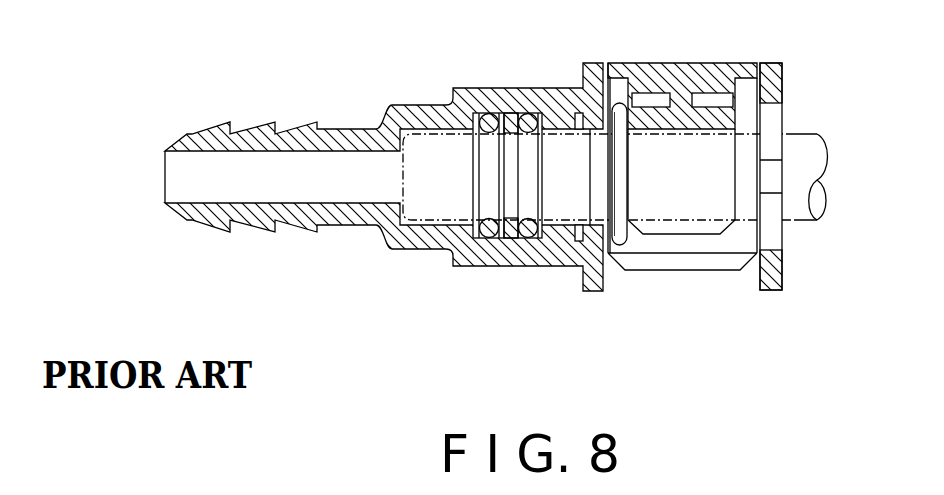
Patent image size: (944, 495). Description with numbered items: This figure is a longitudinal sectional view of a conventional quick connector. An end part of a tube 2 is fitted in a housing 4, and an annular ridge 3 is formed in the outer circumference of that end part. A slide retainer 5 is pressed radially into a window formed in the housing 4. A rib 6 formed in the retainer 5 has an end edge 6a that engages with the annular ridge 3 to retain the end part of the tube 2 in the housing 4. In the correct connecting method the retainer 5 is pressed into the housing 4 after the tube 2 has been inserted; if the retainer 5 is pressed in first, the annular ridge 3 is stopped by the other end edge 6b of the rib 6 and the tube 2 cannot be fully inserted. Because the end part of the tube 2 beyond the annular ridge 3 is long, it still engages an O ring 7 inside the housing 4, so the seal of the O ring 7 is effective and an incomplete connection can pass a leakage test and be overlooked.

The tube 2 is at (797, 136).
The annular ridge 3 is at (617, 231).
The housing 4 is at (513, 88).
The slide retainer 5 is at (681, 72).
The rib 6 is at (683, 122).
The end edge of the rib 6a is at (623, 105).
The other end edge of the rib 6b is at (743, 107).
The O ring 7 is at (529, 239).